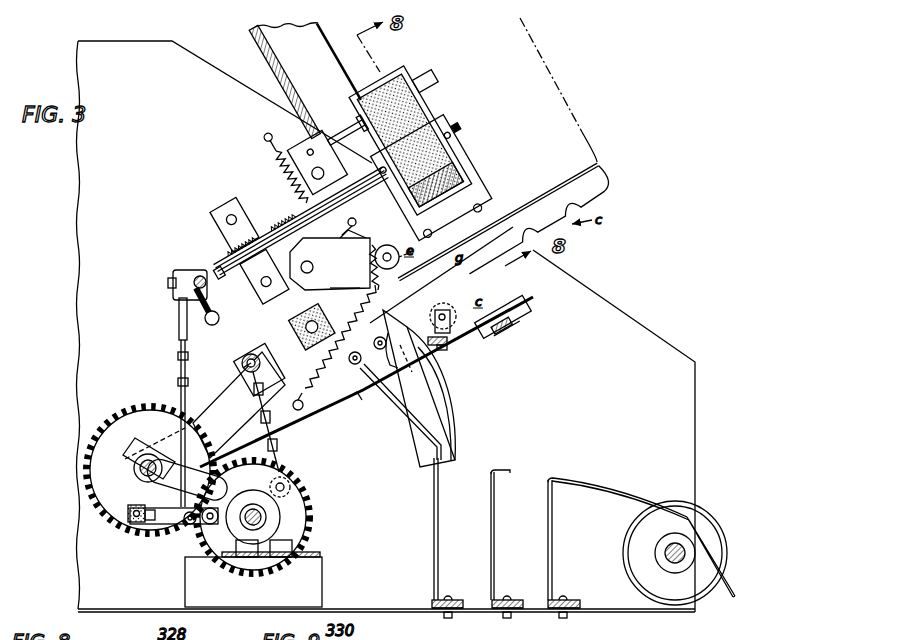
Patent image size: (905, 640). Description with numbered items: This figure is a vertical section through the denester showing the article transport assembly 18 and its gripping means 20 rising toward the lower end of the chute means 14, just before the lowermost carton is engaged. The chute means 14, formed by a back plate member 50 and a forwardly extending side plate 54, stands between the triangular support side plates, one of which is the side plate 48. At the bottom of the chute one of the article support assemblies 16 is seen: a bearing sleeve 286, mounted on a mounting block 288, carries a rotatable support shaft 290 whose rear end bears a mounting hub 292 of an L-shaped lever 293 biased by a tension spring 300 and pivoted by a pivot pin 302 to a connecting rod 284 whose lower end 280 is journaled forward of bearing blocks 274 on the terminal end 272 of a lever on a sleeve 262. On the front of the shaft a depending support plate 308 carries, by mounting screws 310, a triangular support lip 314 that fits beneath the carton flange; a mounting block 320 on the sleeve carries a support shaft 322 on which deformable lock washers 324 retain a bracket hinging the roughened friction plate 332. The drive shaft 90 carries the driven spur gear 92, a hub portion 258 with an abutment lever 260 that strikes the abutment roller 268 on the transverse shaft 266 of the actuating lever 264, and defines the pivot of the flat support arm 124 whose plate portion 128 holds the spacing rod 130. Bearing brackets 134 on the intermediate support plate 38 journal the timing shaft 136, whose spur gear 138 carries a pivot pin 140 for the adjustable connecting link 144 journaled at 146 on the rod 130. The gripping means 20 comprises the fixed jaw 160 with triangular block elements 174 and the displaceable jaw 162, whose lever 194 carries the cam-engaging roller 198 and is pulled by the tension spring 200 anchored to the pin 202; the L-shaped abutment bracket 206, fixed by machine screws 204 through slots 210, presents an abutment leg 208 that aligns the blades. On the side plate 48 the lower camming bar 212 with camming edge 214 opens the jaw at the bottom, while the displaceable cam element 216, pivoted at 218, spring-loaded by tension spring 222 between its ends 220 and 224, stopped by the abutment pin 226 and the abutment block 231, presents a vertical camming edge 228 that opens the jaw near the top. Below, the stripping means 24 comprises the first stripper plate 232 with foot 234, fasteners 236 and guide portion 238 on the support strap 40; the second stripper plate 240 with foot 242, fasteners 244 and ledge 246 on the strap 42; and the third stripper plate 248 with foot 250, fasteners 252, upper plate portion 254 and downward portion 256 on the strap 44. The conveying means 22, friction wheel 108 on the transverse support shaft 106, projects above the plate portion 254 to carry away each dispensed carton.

The chute means 14 is at (262, 58).
The article support assembly 16 is at (436, 94).
The article transport assembly 18 is at (363, 393).
The article gripping means 20 is at (536, 315).
The article conveying means 22 is at (715, 511).
The article stripping means 24 is at (733, 586).
The intermediate support plate 38 is at (318, 556).
The forward support strap 40 is at (460, 609).
The forward support strap 42 is at (520, 609).
The forward support strap 44 is at (580, 609).
The support side plate 48 is at (608, 318).
The back plate member 50 is at (270, 54).
The chute side plate 54 is at (320, 42).
The drive shaft 90 is at (135, 470).
The driven spur gear 92 is at (124, 412).
The transverse support shaft 106 is at (684, 566).
The friction wheel 108 is at (722, 545).
The support arm 124 is at (226, 420).
The vertically extending plate portion 128 is at (270, 354).
The spacing rod 130 is at (246, 357).
The bearing bracket 134 is at (276, 519).
The timing shaft 136 is at (253, 505).
The spur gear 138 is at (308, 502).
The pivot pin 140 is at (291, 483).
The adjustable connecting link 144 is at (272, 437).
The link journal on rod 146 is at (243, 368).
The fixed gripping jaw 160 is at (500, 336).
The displaceable gripping jaw 162 is at (462, 346).
The triangular-shaped block element 174 is at (526, 303).
The lever 194 is at (377, 286).
The cam-engaging roller element 198 is at (388, 246).
The tension spring 200 is at (350, 318).
The pin 202 is at (294, 404).
The machine screw 204 is at (352, 400).
The L-shaped abutment bracket 206 is at (405, 370).
The abutment leg portion 208 is at (440, 350).
The longitudinal slot 210 is at (377, 338).
The lower camming bar 212 is at (446, 408).
The camming edge 214 is at (441, 388).
The displaceable cam element 216 is at (336, 261).
The pivot axis 218 is at (335, 283).
The spring end 220 is at (312, 265).
The tension spring 222 is at (279, 166).
The spring end 224 is at (262, 139).
The abutment pin 226 is at (353, 218).
The camming edge 228 is at (365, 237).
The abutment block 231 is at (298, 322).
The first stripper plate 232 is at (439, 534).
The foot portion 234 is at (450, 597).
The fastener 236 is at (443, 619).
The angular guide portion 238 is at (393, 406).
The second stripper plate 240 is at (496, 534).
The foot portion 242 is at (510, 597).
The fastener 244 is at (507, 619).
The ledge portion 246 is at (512, 471).
The third stripper plate 248 is at (554, 534).
The foot portion 250 is at (571, 597).
The fastener 252 is at (563, 619).
The upper plate portion 254 is at (606, 489).
The downwardly extending portion 256 is at (736, 598).
The hub portion 258 is at (144, 455).
The abutment lever 260 is at (170, 525).
The sleeve 262 is at (276, 557).
The actuating lever 264 is at (246, 557).
The transverse shaft 266 is at (210, 527).
The abutment roller 268 is at (190, 525).
The lever terminal end 272 is at (150, 522).
The bearing block 274 is at (127, 512).
The connecting rod lower end 280 is at (190, 488).
The connecting rod 284 is at (179, 365).
The bearing sleeve 286 is at (277, 226).
The mounting block 288 is at (212, 208).
The support shaft 290 is at (212, 257).
The mounting hub 292 is at (190, 263).
The L-shaped lever 293 is at (207, 284).
The tension spring 300 is at (216, 316).
The pivot pin 302 is at (175, 284).
The support plate 308 is at (466, 160).
The mounting screw 310 is at (474, 210).
The support lip 314 is at (520, 226).
The mounting block 320 is at (296, 150).
The support shaft 322 is at (338, 146).
The deformable lock washer 324 is at (430, 73).
The friction plate 332 is at (455, 141).